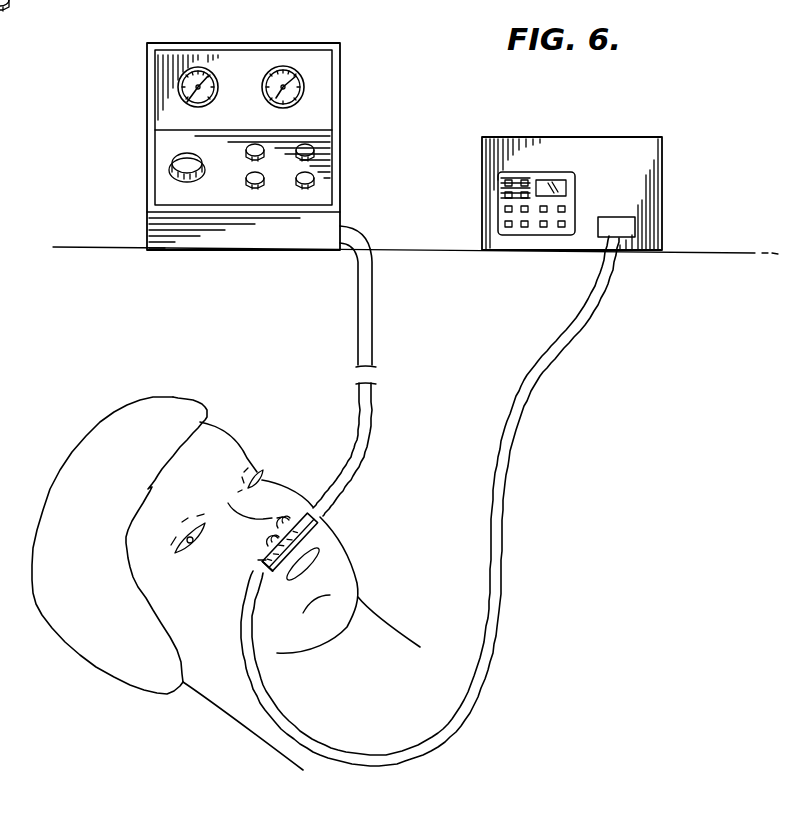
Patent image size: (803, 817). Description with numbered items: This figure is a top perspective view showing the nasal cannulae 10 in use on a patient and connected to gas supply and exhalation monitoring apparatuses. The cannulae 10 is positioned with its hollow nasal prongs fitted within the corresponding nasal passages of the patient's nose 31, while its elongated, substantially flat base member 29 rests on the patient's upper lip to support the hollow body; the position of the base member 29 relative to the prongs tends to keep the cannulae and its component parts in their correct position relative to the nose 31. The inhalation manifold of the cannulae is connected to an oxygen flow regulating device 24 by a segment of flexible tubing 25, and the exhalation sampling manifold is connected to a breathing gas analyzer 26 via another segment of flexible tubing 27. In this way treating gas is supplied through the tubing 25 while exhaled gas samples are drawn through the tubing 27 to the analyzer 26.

The oxygen flow regulating device 24 is at (341, 103).
The breathing gas analyzer 26 is at (647, 168).
The flexible tubing segment 25 is at (373, 414).
The flexible tubing segment 27 is at (528, 410).
The base member 29 is at (318, 527).
The nose 31 is at (268, 522).
The nasal cannulae 10 is at (253, 561).